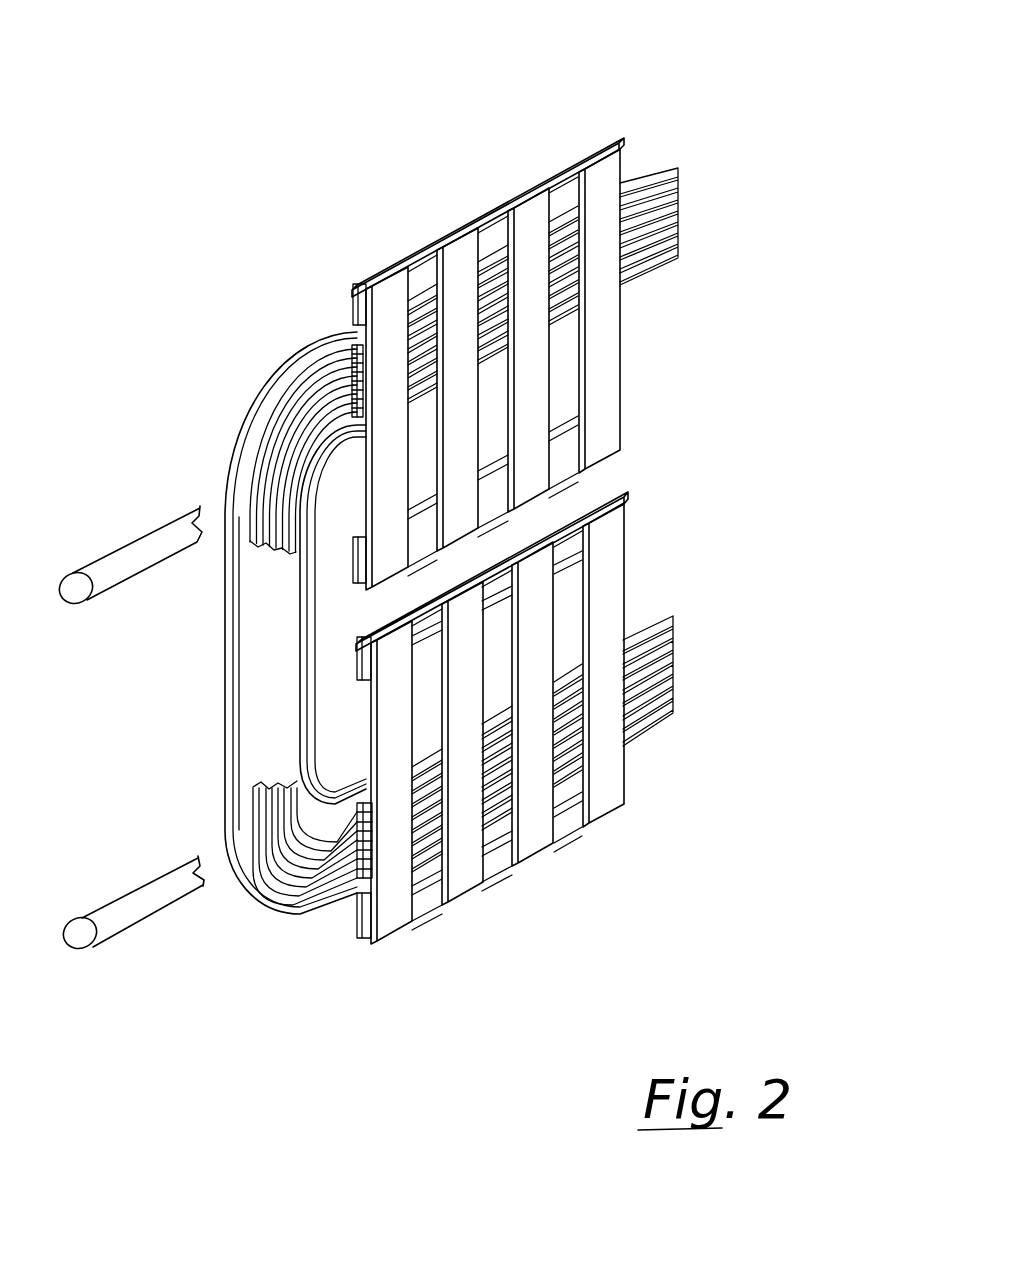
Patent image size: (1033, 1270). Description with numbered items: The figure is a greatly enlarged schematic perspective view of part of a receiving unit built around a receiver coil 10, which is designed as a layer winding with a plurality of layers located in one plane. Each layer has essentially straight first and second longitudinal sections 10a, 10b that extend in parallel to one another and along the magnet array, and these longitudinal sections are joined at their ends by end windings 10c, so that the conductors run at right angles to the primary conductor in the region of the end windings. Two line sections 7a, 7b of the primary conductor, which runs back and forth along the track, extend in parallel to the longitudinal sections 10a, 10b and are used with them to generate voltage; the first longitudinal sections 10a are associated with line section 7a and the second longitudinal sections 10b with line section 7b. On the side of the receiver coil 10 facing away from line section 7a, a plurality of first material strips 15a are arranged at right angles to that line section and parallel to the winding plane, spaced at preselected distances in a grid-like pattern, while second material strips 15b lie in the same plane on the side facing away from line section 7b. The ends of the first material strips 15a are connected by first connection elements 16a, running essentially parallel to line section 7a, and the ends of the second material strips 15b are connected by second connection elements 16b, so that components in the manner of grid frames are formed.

The receiver coil 10 is at (782, 220).
The first longitudinal sections 10a is at (660, 165).
The second longitudinal sections 10b is at (675, 620).
The end windings 10c is at (300, 715).
The first material strips 15a is at (600, 400).
The second material strips 15b is at (603, 800).
The first connection elements 16a is at (490, 235).
The second connection elements 16b is at (563, 556).
The line section 7a is at (125, 557).
The line section 7b is at (127, 910).